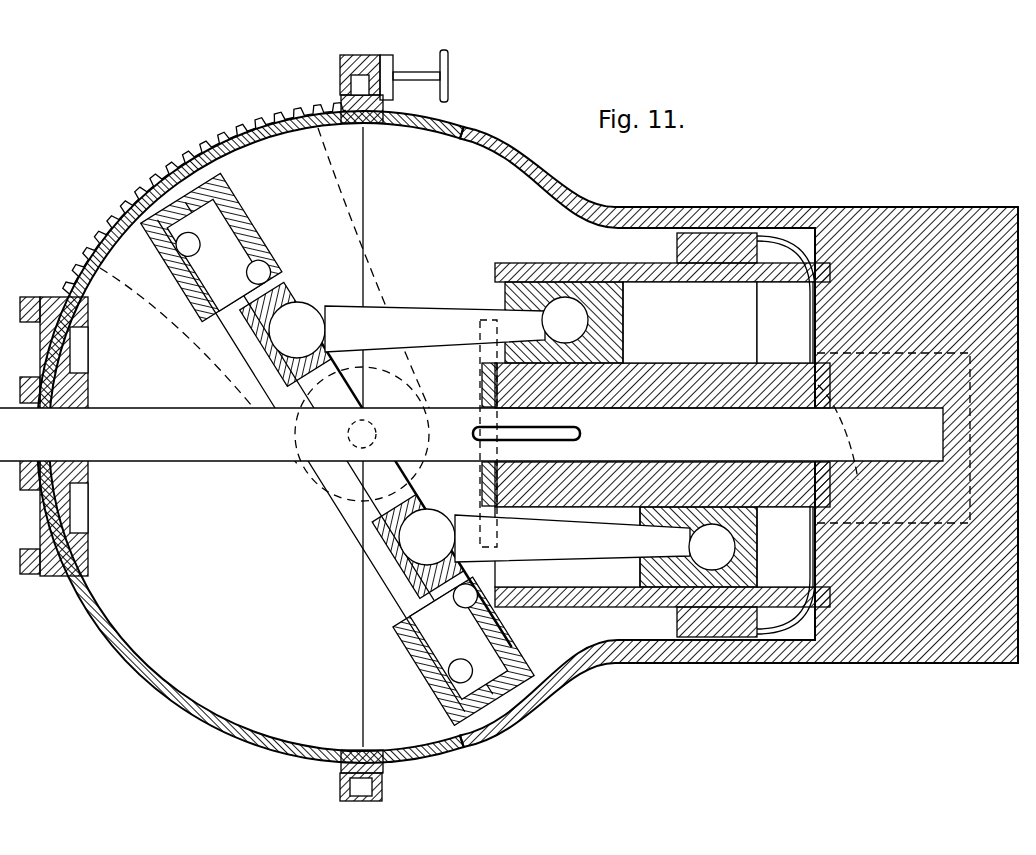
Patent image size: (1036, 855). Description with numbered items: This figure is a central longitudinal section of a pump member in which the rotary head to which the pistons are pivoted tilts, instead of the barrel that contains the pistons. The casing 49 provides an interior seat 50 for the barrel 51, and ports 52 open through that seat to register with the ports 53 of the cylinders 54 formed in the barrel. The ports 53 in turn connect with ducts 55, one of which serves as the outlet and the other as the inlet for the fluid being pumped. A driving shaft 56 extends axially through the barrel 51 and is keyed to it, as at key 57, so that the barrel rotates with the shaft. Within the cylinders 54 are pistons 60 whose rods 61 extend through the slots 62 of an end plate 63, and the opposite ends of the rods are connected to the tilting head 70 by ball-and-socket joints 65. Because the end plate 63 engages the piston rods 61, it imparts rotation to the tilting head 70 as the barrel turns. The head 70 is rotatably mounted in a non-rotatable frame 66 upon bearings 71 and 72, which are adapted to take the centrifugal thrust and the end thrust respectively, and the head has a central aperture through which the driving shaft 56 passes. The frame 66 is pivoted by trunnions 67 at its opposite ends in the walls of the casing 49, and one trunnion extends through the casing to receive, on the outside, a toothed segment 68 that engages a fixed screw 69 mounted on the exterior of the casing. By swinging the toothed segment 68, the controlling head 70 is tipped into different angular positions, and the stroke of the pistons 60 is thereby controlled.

The casing 49 is at (158, 692).
The interior seat 50 is at (893, 438).
The barrel 51 is at (578, 263).
The ports 52 is at (867, 523).
The ports 53 is at (807, 352).
The cylinders 54 is at (626, 435).
The ducts 55 is at (945, 487).
The driving shaft 56 is at (170, 447).
The key 57 is at (582, 434).
The pistons 60 is at (528, 290).
The rods 61 is at (530, 433).
The slots 62 is at (487, 353).
The end plate 63 is at (483, 385).
The ball-and-socket joint 65 is at (283, 307).
The non-rotatable frame 66 is at (230, 197).
The trunnions 67 is at (357, 443).
The toothed segment 68 is at (80, 232).
The screw 69 is at (356, 60).
The tilting head 70 is at (220, 330).
The bearings 71 is at (265, 267).
The bearings 72 is at (173, 270).